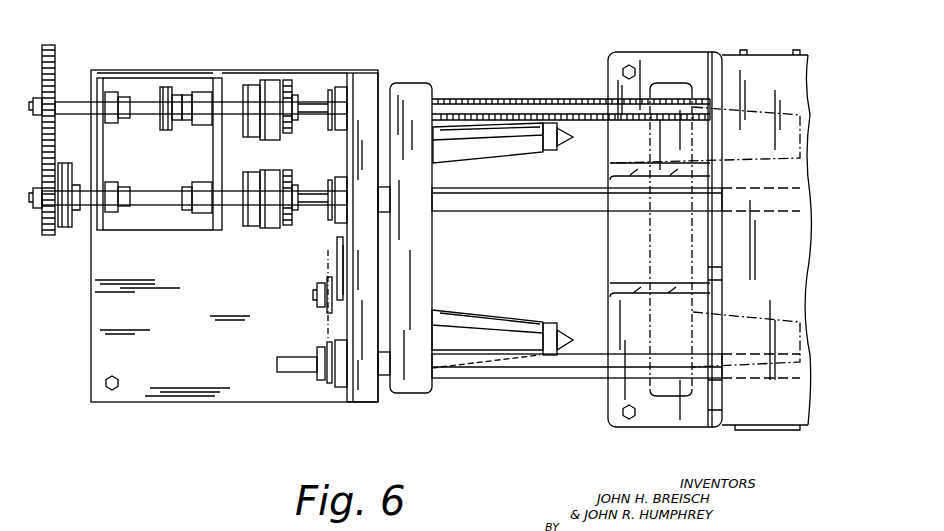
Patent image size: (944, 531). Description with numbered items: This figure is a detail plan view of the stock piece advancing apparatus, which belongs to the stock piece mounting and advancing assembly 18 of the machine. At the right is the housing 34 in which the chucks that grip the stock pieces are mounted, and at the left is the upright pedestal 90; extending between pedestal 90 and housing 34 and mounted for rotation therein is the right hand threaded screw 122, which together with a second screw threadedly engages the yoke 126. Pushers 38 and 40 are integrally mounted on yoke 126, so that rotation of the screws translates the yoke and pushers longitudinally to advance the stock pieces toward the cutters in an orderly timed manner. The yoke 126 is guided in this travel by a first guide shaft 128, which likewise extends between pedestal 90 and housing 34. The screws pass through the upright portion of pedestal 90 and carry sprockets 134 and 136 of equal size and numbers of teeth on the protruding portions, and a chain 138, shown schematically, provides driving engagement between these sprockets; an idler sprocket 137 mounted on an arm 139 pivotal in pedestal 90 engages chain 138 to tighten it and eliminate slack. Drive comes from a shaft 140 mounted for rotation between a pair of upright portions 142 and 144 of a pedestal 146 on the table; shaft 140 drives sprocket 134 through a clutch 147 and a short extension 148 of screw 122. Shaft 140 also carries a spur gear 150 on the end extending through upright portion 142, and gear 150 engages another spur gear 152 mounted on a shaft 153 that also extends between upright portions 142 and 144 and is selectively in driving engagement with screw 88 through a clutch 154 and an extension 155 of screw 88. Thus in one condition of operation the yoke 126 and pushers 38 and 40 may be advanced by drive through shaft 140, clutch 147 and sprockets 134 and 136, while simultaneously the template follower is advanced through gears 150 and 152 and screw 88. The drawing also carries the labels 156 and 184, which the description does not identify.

The stock piece mounting and advancing assembly 18 is at (429, 393).
The housing 34 is at (763, 63).
The pusher 38 is at (561, 149).
The pusher 40 is at (558, 320).
The screw 88 is at (520, 211).
The pedestal 90 is at (368, 402).
The right hand threaded screw 122 is at (543, 98).
The yoke 126 is at (428, 287).
The first guide shaft 128 is at (545, 379).
The sprocket 134 is at (327, 127).
The sprocket 136 is at (325, 382).
The idler sprocket 137 is at (317, 292).
The chain 138 is at (331, 246).
The arm 139 is at (343, 272).
The shaft 140 is at (145, 114).
The upright portion 142 is at (102, 78).
The upright portion 144 is at (218, 83).
The pedestal 146 is at (172, 230).
The clutch 147 is at (270, 86).
The short extension 148 is at (307, 108).
The spur gear 150 is at (54, 48).
The spur gear 152 is at (46, 226).
The shaft 153 is at (145, 203).
The clutch 154 is at (270, 226).
The extension 155 is at (320, 202).
The pulley 156 is at (67, 168).
The coupling half 184 is at (205, 60).